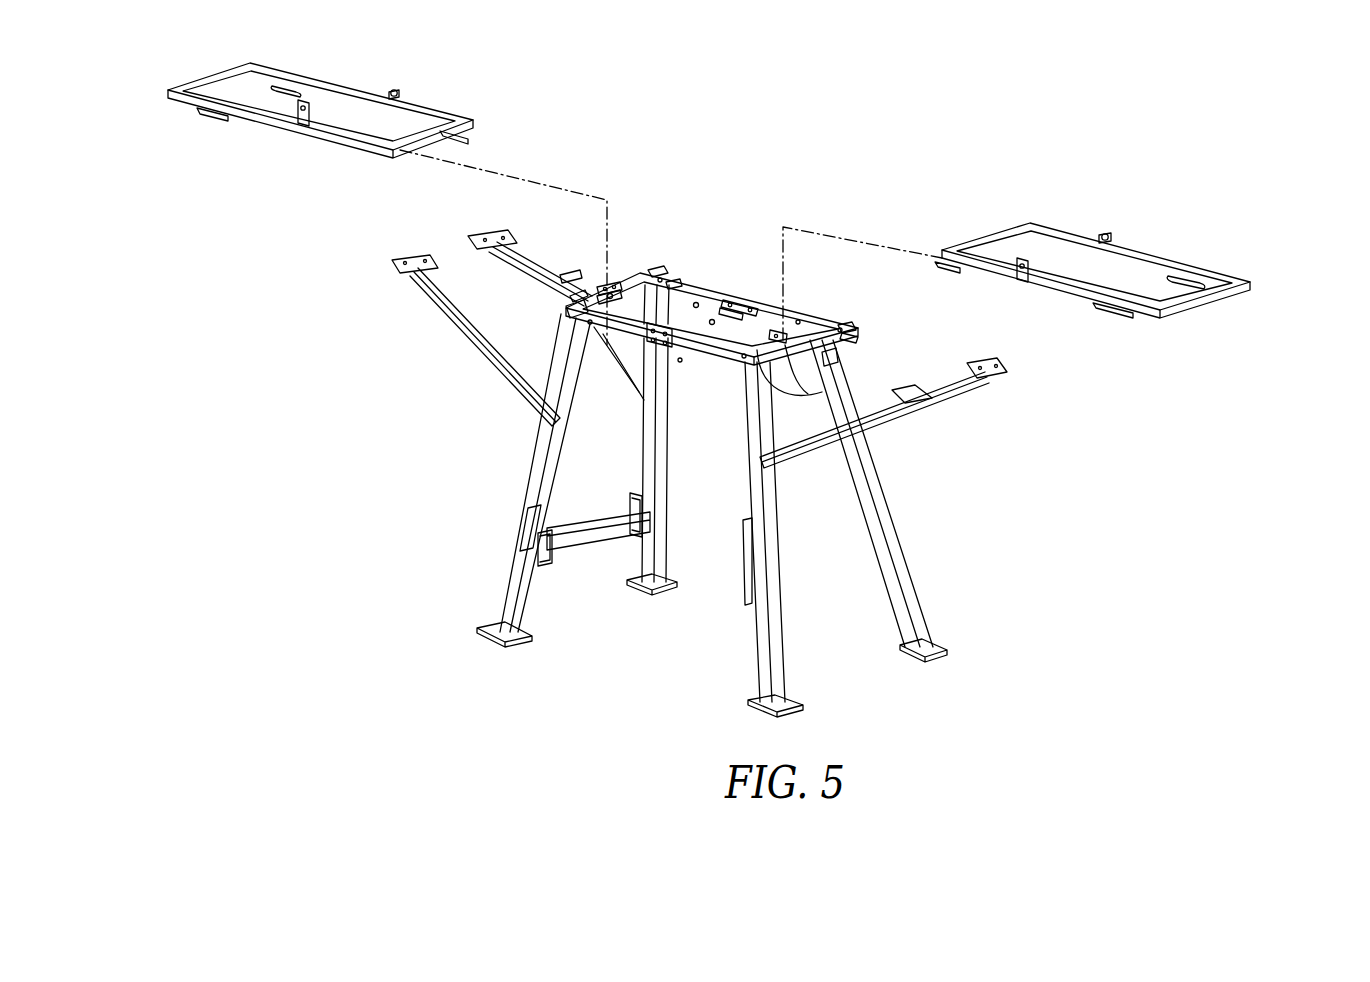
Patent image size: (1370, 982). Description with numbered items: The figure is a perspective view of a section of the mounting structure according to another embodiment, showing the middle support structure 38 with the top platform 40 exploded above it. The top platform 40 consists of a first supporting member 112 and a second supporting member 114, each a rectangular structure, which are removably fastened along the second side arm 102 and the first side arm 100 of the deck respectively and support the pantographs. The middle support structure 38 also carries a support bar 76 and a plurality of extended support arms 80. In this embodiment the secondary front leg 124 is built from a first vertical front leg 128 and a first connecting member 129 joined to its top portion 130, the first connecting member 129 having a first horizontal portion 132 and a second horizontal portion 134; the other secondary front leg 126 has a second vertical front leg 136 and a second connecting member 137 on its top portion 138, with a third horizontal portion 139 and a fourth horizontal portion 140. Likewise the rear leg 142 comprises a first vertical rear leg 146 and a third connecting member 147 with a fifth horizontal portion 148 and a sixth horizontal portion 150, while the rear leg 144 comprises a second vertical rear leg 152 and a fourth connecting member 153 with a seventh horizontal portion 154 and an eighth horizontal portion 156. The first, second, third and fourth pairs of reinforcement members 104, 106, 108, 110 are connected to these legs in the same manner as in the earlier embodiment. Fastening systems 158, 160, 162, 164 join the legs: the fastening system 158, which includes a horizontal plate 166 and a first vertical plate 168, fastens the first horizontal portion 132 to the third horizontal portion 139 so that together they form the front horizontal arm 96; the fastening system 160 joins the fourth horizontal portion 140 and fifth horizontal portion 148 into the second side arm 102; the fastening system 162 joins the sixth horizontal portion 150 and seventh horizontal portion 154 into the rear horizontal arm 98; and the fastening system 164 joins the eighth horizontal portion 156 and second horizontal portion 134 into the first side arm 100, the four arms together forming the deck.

The middle support structure 38 is at (317, 622).
The top platform 40 is at (1264, 258).
The support bar 76 is at (582, 548).
The extended support arms 80 is at (525, 273).
The front horizontal arm 96 is at (650, 465).
The rear horizontal arm 98 is at (716, 281).
The first side arm 100 is at (567, 273).
The second side arm 102 is at (851, 340).
The first pair of reinforcement members 104 is at (510, 480).
The second pair of reinforcement members 106 is at (744, 563).
The third pair of reinforcement members 108 is at (760, 307).
The fourth pair of reinforcement members 110 is at (673, 358).
The first supporting member 112 is at (443, 112).
The second supporting member 114 is at (1163, 262).
The secondary front leg 124 is at (497, 578).
The secondary front leg 126 is at (790, 672).
The first vertical front leg 128 is at (520, 538).
The first connecting member 129 is at (570, 291).
The top portion 130 is at (565, 315).
The first horizontal portion 132 is at (658, 271).
The second horizontal portion 134 is at (580, 287).
The second vertical front leg 136 is at (784, 531).
The second connecting member 137 is at (695, 301).
The top portion 138 is at (742, 360).
The third horizontal portion 139 is at (714, 325).
The fourth horizontal portion 140 is at (760, 352).
The rear leg 142 is at (909, 501).
The rear leg 144 is at (594, 566).
The first vertical rear leg 146 is at (923, 627).
The third connecting member 147 is at (846, 328).
The fifth horizontal portion 148 is at (841, 327).
The sixth horizontal portion 150 is at (797, 318).
The second vertical rear leg 152 is at (658, 566).
The fourth connecting member 153 is at (660, 266).
The seventh horizontal portion 154 is at (673, 284).
The eighth horizontal portion 156 is at (611, 292).
The fastening system 158 is at (681, 362).
The fastening system 160 is at (830, 357).
The fastening system 162 is at (737, 288).
The fastening system 164 is at (600, 286).
The horizontal plate 166 is at (606, 372).
The first vertical plate 168 is at (605, 340).